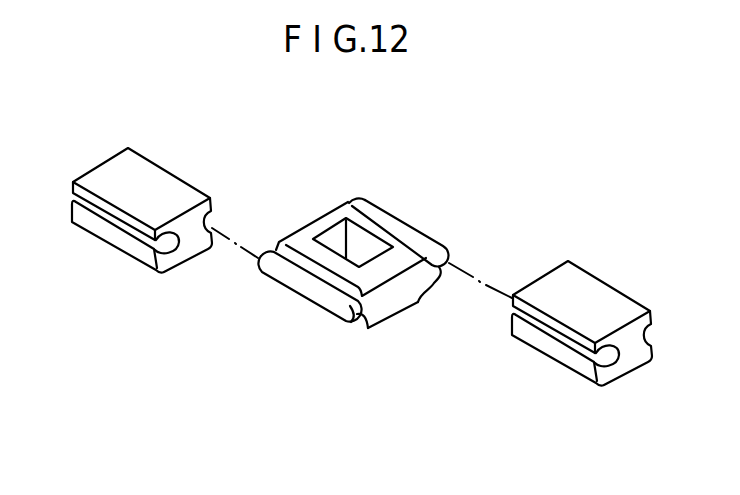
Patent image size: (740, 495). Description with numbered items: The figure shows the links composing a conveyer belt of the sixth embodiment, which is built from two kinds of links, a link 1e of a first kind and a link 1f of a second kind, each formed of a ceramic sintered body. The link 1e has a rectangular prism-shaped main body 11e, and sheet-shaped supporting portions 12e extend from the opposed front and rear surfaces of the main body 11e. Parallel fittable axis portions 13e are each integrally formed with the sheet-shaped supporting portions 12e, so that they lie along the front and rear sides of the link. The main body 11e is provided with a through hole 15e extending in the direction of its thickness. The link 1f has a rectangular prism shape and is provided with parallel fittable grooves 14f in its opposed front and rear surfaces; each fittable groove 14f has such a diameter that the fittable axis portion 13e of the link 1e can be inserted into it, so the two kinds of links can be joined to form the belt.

The link of a first kind 1e is at (364, 254).
The link of a second kind 1f is at (362, 256).
The main body 11e is at (351, 234).
The sheet-shaped supporting portion 12e is at (430, 272).
The fittable axis portion 13e is at (354, 318).
The fittable groove 14f is at (590, 373).
The through hole 15e is at (368, 250).